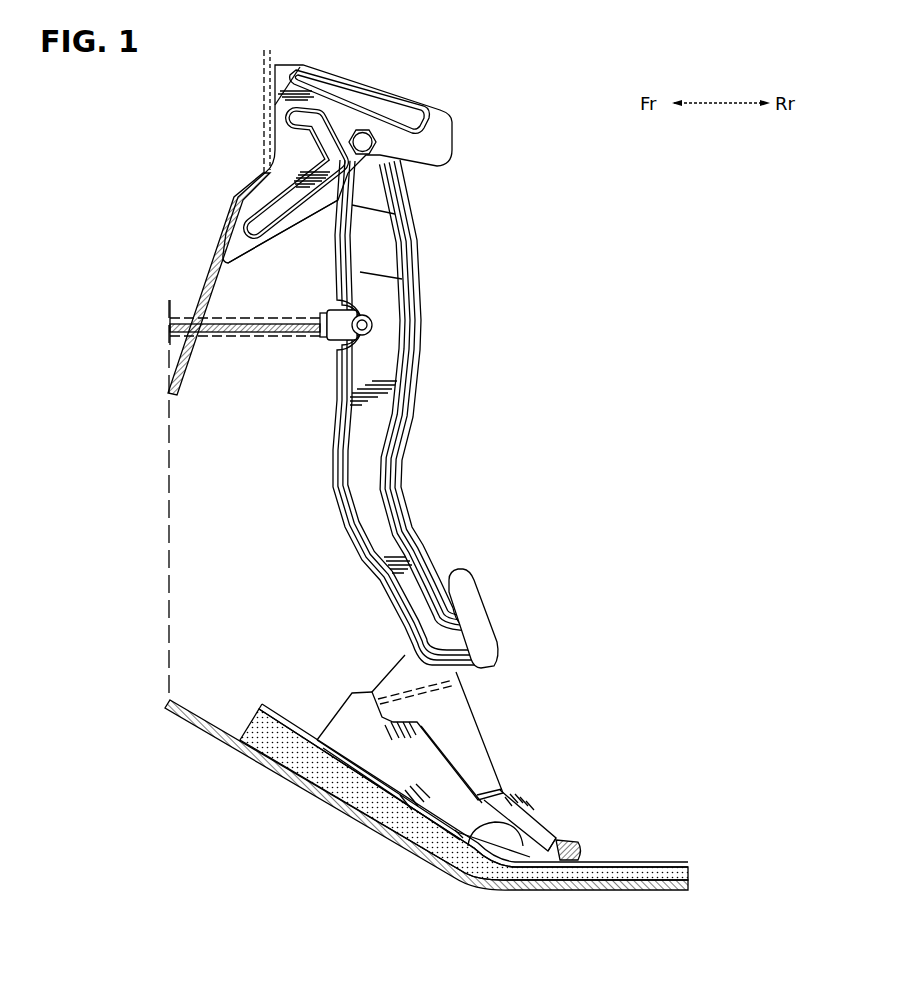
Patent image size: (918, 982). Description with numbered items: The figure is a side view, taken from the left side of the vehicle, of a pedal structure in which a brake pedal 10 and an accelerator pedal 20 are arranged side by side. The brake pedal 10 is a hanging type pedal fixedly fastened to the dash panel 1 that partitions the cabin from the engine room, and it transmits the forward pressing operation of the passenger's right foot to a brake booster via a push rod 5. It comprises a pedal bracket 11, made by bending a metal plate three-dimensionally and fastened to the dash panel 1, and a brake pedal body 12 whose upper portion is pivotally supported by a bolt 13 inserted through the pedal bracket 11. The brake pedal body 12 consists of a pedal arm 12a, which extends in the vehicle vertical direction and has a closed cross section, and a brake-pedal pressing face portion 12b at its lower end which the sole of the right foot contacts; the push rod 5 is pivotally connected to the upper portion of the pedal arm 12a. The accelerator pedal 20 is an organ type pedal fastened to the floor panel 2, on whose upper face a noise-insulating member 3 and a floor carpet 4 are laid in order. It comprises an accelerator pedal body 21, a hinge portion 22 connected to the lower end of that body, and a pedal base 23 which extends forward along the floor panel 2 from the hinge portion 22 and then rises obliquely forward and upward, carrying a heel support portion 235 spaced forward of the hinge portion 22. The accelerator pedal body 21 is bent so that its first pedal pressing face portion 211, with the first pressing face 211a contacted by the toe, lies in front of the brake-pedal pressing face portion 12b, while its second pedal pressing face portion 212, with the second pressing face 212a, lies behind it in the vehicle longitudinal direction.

The dash panel 1 is at (206, 271).
The floor panel 2 is at (672, 893).
The noise-insulating member 3 is at (692, 877).
The floor carpet 4 is at (674, 858).
The push rod 5 is at (232, 340).
The brake pedal 10 is at (452, 113).
The pedal bracket 11 is at (305, 222).
The brake pedal body 12 is at (467, 414).
The pedal arm 12a is at (387, 528).
The brake-pedal pressing face portion 12b is at (507, 618).
The bolt 13 is at (362, 132).
The accelerator pedal 20 is at (447, 778).
The accelerator pedal body 21 is at (499, 745).
The first pedal pressing face portion 211 is at (471, 724).
The first pressing face 211a is at (470, 696).
The second pedal pressing face portion 212 is at (555, 798).
The second pressing face 212a is at (531, 832).
The hinge portion 22 is at (565, 848).
The pedal base 23 is at (399, 802).
The heel support portion 235 is at (456, 855).